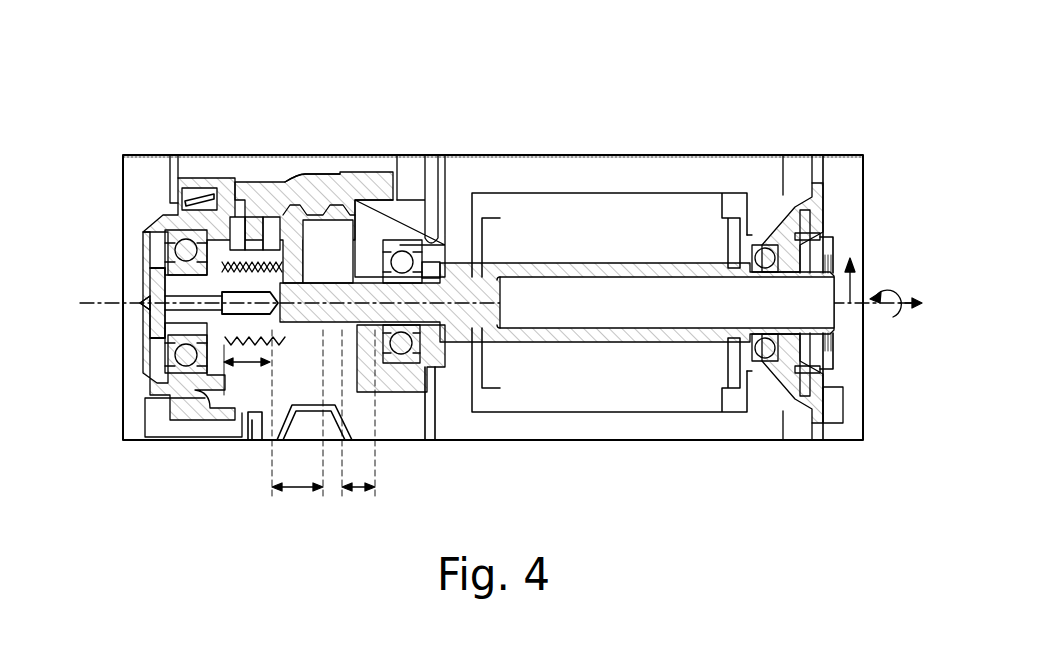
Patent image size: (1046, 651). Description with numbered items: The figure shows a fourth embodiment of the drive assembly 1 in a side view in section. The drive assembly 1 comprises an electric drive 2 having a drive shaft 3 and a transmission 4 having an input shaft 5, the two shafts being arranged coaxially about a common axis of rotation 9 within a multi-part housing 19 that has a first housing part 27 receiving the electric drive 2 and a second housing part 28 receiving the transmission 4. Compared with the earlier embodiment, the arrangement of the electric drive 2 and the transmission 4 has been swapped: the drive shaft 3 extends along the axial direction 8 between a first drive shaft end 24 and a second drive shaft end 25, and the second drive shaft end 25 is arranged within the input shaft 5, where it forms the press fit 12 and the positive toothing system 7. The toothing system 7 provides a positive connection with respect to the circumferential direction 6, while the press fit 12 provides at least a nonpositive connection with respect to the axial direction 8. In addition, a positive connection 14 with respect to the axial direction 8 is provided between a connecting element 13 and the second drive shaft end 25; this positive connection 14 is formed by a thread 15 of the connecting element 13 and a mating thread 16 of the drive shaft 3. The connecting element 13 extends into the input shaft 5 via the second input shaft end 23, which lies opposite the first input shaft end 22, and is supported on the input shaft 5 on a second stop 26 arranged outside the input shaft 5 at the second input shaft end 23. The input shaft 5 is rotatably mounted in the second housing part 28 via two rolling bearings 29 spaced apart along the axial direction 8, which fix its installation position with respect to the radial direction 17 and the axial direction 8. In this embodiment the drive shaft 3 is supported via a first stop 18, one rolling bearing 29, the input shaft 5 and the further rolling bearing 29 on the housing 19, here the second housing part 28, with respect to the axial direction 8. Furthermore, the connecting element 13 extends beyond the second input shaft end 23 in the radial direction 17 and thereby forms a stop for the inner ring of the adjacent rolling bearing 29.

The drive assembly 1 is at (608, 98).
The electric drive 2 is at (660, 218).
The drive shaft 3 is at (578, 338).
The transmission 4 is at (324, 185).
The input shaft 5 is at (311, 200).
The circumferential direction 6 is at (891, 290).
The toothing system 7 is at (360, 323).
The axial direction 8 is at (912, 316).
The axis of rotation 9 is at (815, 305).
The press fit 12 is at (429, 442).
The connecting element 13 is at (165, 290).
The positive connection 14 is at (185, 380).
The thread 15 is at (263, 262).
The mating thread 16 is at (152, 310).
The radial direction 17 is at (850, 288).
The first stop 18 is at (442, 250).
The housing 19 is at (157, 222).
The first input shaft end 22 is at (425, 262).
The second input shaft end 23 is at (150, 328).
The first drive shaft end 24 is at (848, 250).
The second drive shaft end 25 is at (240, 215).
The second stop 26 is at (150, 270).
The first housing part 27 is at (767, 223).
The second housing part 28 is at (178, 213).
The rolling bearings 29 is at (168, 230).